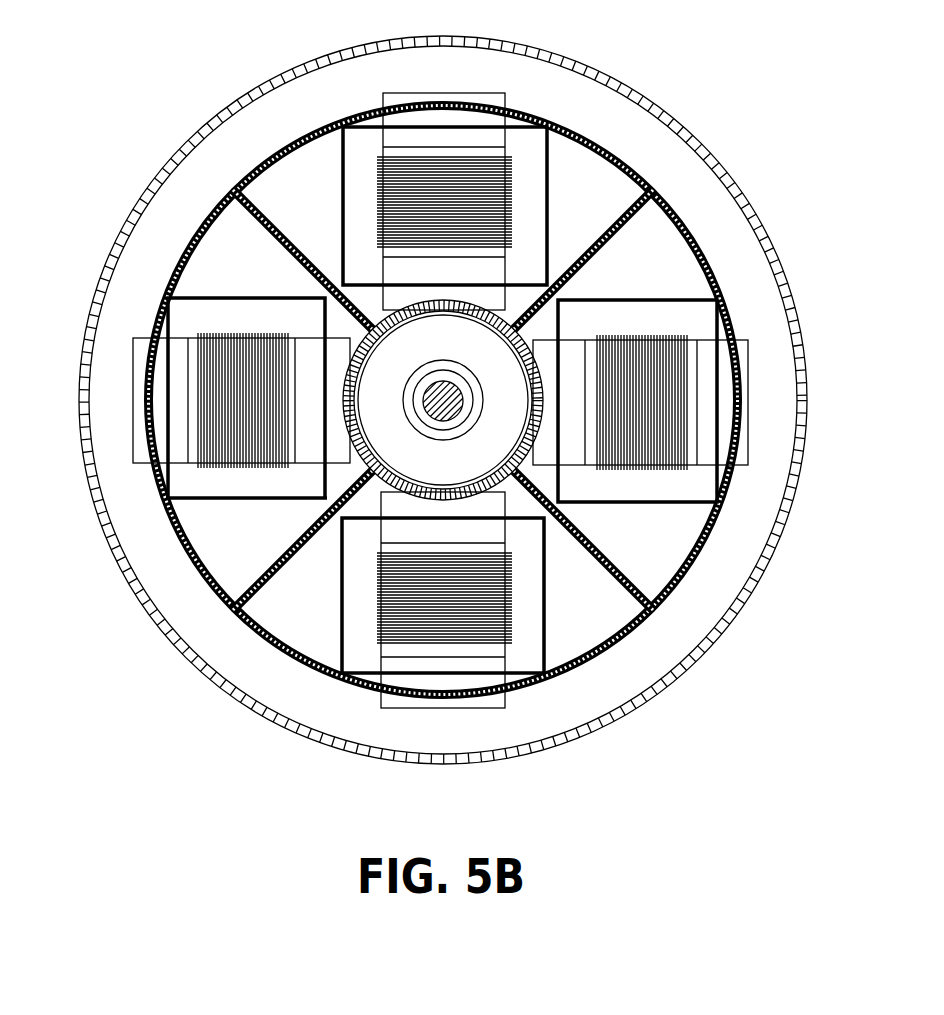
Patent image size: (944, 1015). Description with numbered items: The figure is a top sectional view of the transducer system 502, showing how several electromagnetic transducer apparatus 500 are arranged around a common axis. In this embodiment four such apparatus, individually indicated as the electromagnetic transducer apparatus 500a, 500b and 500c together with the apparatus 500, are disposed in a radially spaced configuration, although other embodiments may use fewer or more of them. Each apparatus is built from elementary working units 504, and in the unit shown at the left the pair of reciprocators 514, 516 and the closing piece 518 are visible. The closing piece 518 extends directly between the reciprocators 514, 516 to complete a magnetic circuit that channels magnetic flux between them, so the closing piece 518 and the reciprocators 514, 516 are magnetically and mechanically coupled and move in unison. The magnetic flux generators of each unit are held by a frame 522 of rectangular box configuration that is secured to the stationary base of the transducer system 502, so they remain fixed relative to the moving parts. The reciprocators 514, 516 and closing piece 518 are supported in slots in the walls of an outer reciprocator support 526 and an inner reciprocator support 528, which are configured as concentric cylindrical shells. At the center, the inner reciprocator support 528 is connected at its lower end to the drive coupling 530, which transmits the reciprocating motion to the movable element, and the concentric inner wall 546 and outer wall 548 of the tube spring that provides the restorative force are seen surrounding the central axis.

The electromagnetic transducer apparatus 500 is at (187, 393).
The electromagnet assembly 500a is at (772, 400).
The electromagnet assembly 500b is at (447, 85).
The electromagnet assembly 500c is at (440, 718).
The transducer system 502 is at (168, 93).
The elementary working unit 504 is at (258, 290).
The reciprocator 514 is at (142, 352).
The reciprocator 516 is at (311, 345).
The closing piece 518 is at (293, 343).
The frame 522 is at (257, 505).
The outer reciprocator support 526 is at (170, 527).
The inner reciprocator support 528 is at (352, 482).
The drive coupling 530 is at (380, 435).
The inner wall 546 is at (463, 420).
The outer wall 548 is at (463, 366).